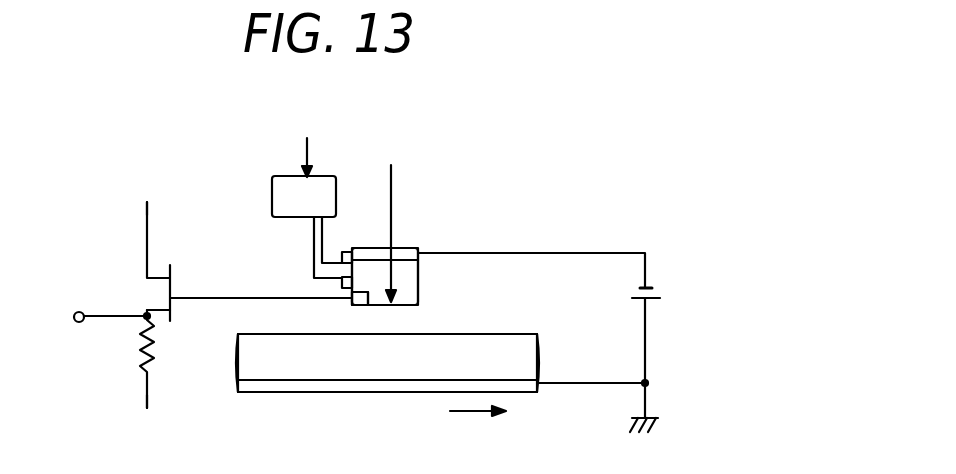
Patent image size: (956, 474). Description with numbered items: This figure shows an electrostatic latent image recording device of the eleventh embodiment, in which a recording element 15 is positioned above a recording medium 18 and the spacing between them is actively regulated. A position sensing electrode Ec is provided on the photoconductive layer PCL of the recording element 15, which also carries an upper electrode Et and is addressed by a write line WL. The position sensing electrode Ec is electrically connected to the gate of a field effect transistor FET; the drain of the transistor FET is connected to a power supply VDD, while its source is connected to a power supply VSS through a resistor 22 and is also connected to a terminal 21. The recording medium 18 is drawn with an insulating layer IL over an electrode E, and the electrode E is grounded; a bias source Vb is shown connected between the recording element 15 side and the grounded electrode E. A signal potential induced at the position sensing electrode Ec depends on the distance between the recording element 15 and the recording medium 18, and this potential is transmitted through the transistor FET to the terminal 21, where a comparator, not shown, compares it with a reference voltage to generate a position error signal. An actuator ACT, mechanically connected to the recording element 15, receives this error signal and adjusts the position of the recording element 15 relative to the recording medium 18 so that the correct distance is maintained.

The recording element 15 is at (415, 295).
The recording medium 18 is at (530, 353).
The terminal 21 is at (76, 312).
The resistor 22 is at (132, 362).
The field effect transistor FET is at (153, 293).
The actuator ACT is at (308, 183).
The photoconductive layer PCL is at (410, 280).
The top electrode Et is at (405, 250).
The position sensing electrode Ec is at (360, 305).
The write line WL is at (390, 217).
The insulating layer IL is at (240, 352).
The electrode E is at (248, 405).
The bias voltage source Vb is at (661, 349).
The power supply VDD is at (147, 193).
The power supply VSS is at (142, 420).